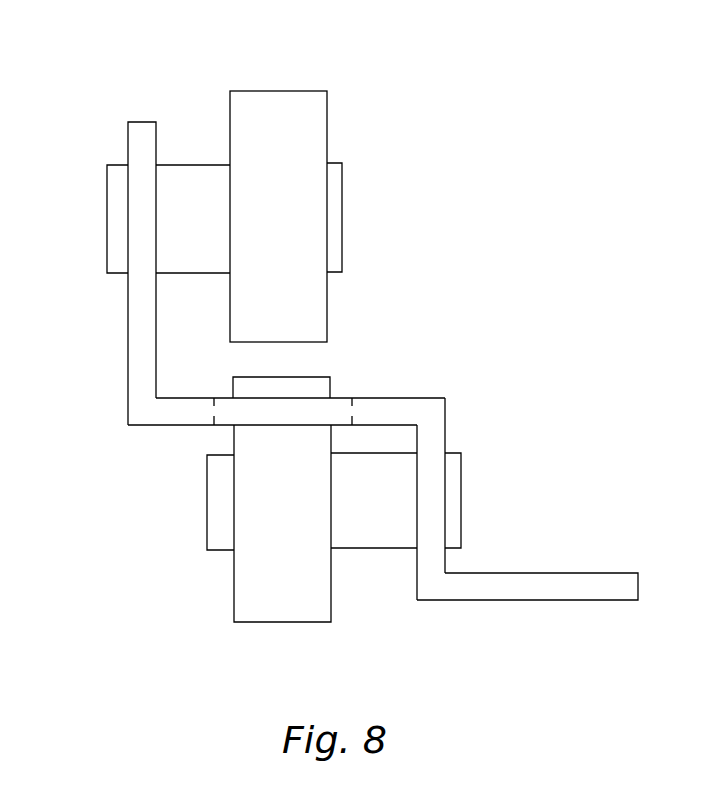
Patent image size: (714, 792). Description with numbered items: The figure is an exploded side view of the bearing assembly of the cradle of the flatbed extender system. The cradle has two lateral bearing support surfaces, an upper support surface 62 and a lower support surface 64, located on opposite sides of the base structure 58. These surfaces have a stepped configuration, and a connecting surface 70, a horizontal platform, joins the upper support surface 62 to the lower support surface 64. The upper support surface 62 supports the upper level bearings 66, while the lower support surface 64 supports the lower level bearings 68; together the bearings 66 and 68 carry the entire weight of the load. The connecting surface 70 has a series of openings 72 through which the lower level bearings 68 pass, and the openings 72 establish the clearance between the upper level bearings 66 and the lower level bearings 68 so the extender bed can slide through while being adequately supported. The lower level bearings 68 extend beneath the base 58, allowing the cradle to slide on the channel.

The base structure 58 is at (527, 600).
The upper support surface 62 is at (128, 322).
The lower support surface 64 is at (433, 433).
The upper level bearings 66 is at (298, 91).
The lower level bearings 68 is at (234, 582).
The connecting surface 70 is at (363, 397).
The openings 72 is at (263, 412).